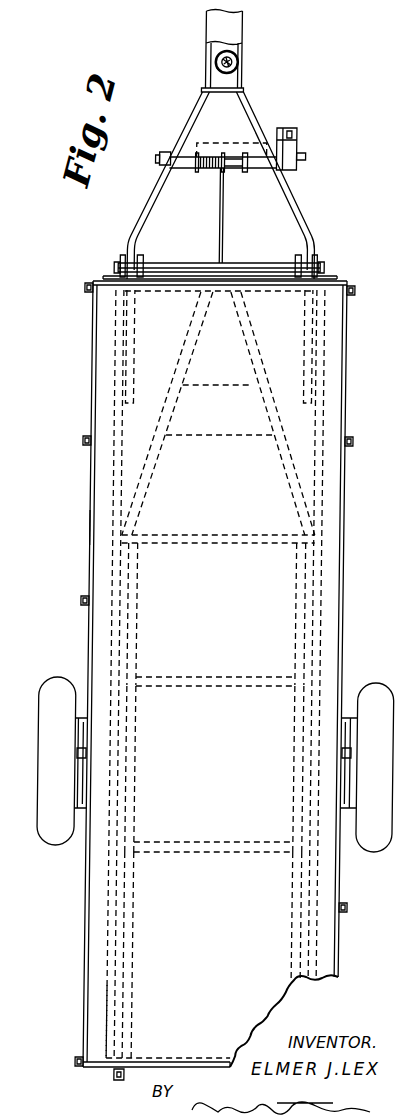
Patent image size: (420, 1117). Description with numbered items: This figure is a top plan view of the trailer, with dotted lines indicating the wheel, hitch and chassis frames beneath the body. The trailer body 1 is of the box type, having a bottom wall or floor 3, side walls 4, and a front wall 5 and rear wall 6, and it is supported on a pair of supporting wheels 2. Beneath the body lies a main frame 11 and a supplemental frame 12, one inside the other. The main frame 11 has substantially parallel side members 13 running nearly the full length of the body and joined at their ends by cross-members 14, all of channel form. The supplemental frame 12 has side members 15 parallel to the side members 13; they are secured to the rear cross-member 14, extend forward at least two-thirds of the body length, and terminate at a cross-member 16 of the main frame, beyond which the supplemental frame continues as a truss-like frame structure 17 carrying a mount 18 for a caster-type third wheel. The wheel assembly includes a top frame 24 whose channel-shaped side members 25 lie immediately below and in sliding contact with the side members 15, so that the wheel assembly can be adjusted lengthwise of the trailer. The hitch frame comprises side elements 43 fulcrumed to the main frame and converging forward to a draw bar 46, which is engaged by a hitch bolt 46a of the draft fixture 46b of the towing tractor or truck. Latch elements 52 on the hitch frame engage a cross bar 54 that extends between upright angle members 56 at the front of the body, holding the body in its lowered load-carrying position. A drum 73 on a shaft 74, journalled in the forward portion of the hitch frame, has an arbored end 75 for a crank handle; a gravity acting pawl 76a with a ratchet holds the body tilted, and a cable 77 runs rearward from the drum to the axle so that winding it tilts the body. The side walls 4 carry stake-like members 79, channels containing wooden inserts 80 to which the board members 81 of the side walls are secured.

The trailer body 1 is at (342, 560).
The supporting wheels 2 is at (47, 845).
The bottom wall or floor 3 is at (259, 1026).
The side walls 4 is at (88, 962).
The front wall 5 is at (255, 276).
The rear wall 6 is at (119, 1078).
The main frame 11 is at (111, 1020).
The supplemental frame 12 is at (136, 962).
The side members 13 is at (111, 390).
The cross-members 14 is at (166, 293).
The side members 15 is at (137, 618).
The cross-member 16 is at (240, 535).
The truss-like frame structure 17 is at (258, 350).
The mount 18 is at (223, 385).
The top frame 24 is at (226, 677).
The side members 25 is at (140, 768).
The side elements 43 is at (122, 246).
The draw bar 46 is at (210, 80).
The hitch bolt 46a is at (230, 66).
The draft fixture 46b is at (198, 33).
The latch elements 52 is at (133, 292).
The cross bar 54 is at (168, 264).
The angle members 56 is at (109, 267).
The drum 73 is at (224, 168).
The shaft 74 is at (153, 156).
The arbored end 75 is at (290, 138).
The gravity acting pawl 76a is at (296, 160).
The cable 77 is at (214, 226).
The stake-like members 79 is at (80, 440).
The wooden inserts 80 is at (80, 600).
The board members 81 is at (88, 530).